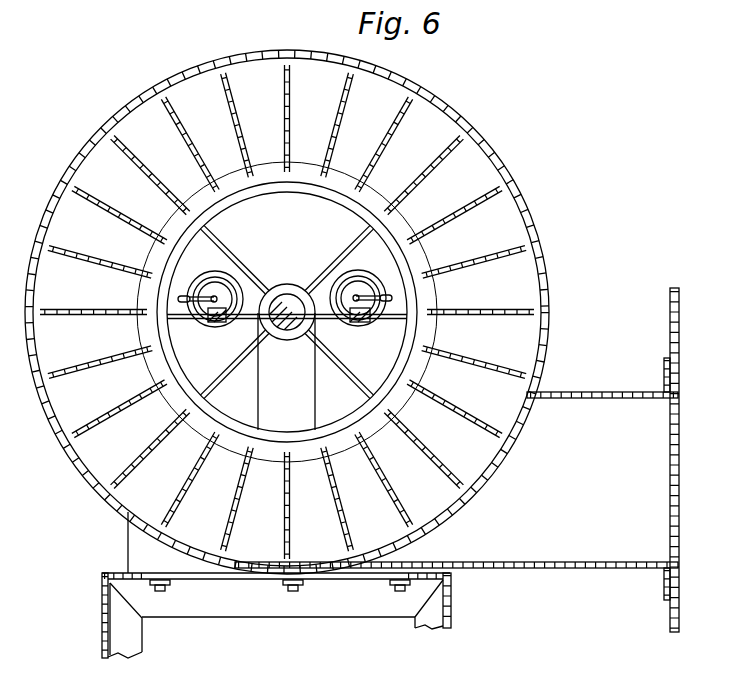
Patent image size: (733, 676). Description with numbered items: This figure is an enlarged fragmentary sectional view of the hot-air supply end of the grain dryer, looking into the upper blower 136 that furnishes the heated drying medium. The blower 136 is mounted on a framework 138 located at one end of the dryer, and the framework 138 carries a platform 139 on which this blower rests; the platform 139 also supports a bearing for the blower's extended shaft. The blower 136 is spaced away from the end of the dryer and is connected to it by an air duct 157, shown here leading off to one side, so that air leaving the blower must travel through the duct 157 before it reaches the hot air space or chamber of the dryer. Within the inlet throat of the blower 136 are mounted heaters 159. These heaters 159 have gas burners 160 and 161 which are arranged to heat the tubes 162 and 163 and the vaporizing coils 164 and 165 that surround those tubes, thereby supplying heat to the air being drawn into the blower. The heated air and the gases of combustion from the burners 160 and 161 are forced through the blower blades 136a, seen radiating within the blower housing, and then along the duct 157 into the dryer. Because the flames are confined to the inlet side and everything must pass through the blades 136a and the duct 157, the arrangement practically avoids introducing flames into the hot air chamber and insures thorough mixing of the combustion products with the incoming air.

The blower 136 is at (287, 312).
The blower blades 136a is at (455, 404).
The air duct 157 is at (603, 451).
The framework 138 is at (100, 647).
The platform 139 is at (302, 612).
The heaters 159 is at (216, 267).
The gas burner 160 is at (215, 318).
The gas burner 161 is at (348, 310).
The tube 162 is at (200, 310).
The tube 163 is at (371, 317).
The vaporizing coil 164 is at (223, 277).
The vaporizing coil 165 is at (340, 285).